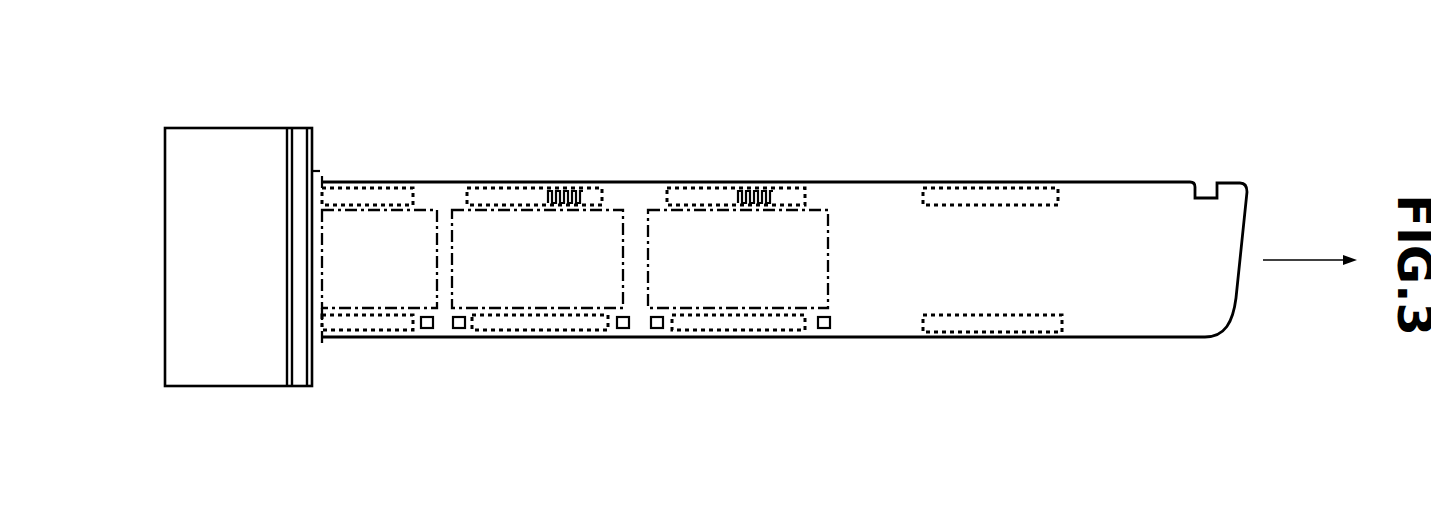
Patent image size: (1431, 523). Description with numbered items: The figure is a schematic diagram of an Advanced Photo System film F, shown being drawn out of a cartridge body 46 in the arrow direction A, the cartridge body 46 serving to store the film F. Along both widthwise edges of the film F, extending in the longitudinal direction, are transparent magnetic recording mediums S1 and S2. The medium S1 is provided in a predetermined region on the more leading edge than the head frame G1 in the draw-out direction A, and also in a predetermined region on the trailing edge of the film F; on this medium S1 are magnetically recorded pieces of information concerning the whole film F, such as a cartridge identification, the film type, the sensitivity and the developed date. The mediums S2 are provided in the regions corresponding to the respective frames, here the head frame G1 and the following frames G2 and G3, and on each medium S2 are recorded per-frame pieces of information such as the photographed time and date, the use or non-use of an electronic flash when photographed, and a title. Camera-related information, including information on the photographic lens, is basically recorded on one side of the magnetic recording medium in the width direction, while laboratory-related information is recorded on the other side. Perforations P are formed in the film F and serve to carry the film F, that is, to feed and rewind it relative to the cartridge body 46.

The cartridge body 46 is at (265, 170).
The Advanced Photo System film F is at (1118, 285).
The magnetic recording medium S1 is at (957, 190).
The magnetic recording medium S2 is at (333, 187).
The head frame G1 is at (800, 243).
The frame G2 is at (598, 246).
The frame G3 is at (402, 243).
The perforations P is at (426, 328).
The arrow direction A is at (1310, 246).